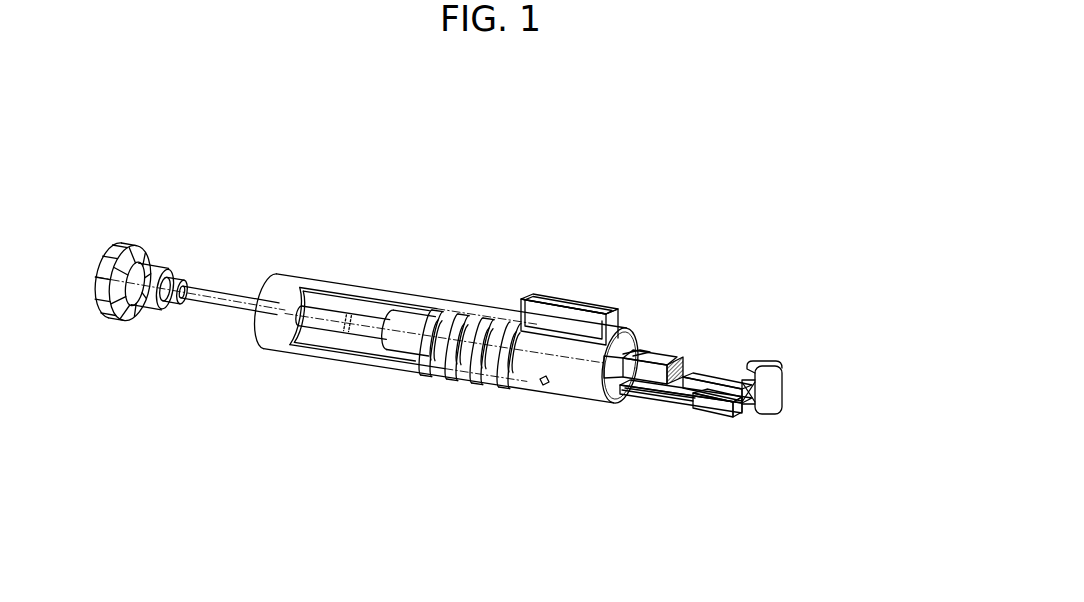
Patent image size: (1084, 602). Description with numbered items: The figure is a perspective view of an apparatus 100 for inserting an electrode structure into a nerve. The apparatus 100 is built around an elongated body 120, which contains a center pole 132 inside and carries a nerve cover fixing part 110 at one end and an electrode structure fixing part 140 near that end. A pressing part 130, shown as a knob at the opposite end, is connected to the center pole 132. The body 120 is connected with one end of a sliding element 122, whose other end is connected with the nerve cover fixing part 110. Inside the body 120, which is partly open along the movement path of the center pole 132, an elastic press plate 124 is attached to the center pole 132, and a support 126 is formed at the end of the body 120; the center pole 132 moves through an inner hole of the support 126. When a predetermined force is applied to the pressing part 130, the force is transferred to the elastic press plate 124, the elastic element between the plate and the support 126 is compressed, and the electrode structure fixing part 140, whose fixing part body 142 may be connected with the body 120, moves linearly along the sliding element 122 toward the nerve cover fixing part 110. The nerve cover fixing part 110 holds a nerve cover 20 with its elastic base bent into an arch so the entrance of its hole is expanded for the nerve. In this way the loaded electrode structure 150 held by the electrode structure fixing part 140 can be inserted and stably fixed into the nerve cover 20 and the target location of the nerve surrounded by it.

The apparatus for insertion of an electrode structure 100 is at (724, 164).
The nerve cover fixing part 110 is at (782, 393).
The body 120 is at (426, 302).
The sliding element 122 is at (670, 402).
The elastic press plate 124 is at (388, 360).
The support 126 is at (567, 382).
The pressing part 130 is at (122, 247).
The center pole 132 is at (208, 318).
The electrode structure fixing part 140 is at (642, 348).
The fixing part body 142 is at (643, 392).
The electrode structure 150 is at (686, 364).
The nerve cover 20 is at (748, 413).